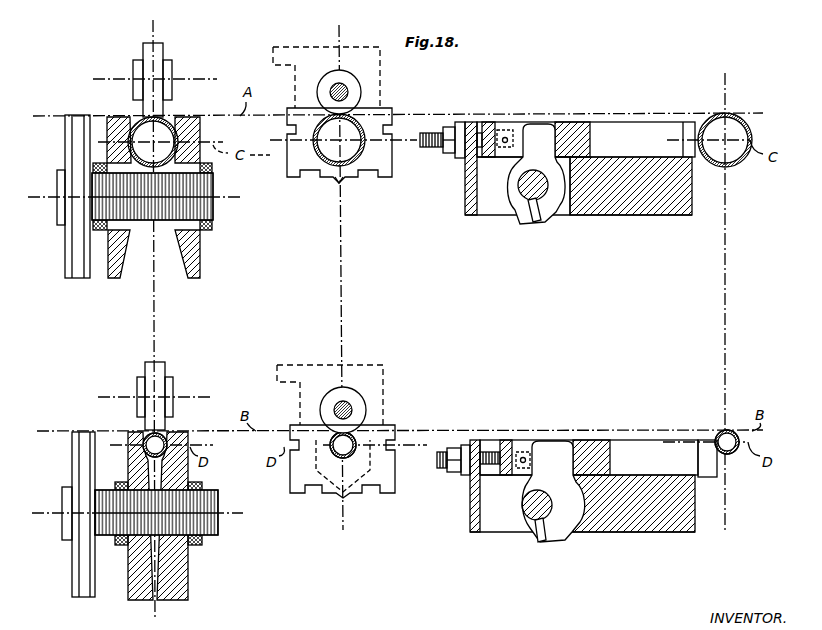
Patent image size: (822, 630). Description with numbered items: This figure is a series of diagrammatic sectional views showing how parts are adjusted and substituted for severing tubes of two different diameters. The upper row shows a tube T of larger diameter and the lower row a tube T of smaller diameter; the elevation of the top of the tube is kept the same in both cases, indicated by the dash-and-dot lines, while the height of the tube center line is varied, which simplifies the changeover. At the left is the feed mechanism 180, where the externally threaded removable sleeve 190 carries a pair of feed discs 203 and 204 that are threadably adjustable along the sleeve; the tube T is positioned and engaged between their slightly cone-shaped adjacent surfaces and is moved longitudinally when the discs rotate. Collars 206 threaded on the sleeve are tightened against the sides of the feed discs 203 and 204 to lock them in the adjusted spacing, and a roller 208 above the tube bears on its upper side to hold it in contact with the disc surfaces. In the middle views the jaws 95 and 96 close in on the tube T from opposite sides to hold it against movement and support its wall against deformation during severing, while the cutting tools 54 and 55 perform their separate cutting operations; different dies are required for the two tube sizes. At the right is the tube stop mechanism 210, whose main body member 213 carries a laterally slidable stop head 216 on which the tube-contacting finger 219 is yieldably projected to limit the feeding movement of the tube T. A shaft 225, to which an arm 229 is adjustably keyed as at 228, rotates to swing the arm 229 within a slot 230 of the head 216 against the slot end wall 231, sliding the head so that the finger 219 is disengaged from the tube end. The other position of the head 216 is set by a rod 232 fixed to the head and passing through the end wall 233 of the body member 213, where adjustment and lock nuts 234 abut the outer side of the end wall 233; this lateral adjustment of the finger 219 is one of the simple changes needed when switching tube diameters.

The feed mechanism 180 is at (64, 158).
The removable sleeve 190 is at (205, 190).
The feed disc 203 is at (112, 278).
The feed disc 204 is at (190, 278).
The collar 206 is at (93, 228).
The roller 208 is at (163, 52).
The cutting tool 55 is at (358, 88).
The cutting tool 54 is at (352, 180).
The jaw 95 is at (300, 172).
The jaw 96 is at (386, 172).
The tube stop mechanism 210 is at (625, 216).
The main body member 213 is at (594, 200).
The stop head 216 is at (628, 135).
The tube-contacting finger 219 is at (686, 122).
The shaft 225 is at (517, 200).
The key 228 is at (542, 220).
The arm 229 is at (540, 126).
The slot 230 is at (505, 130).
The end wall of slot 231 is at (486, 122).
The rod 232 is at (435, 133).
The end wall 233 is at (470, 215).
The adjustment and lock nuts 234 is at (462, 160).
The tube T is at (170, 122).